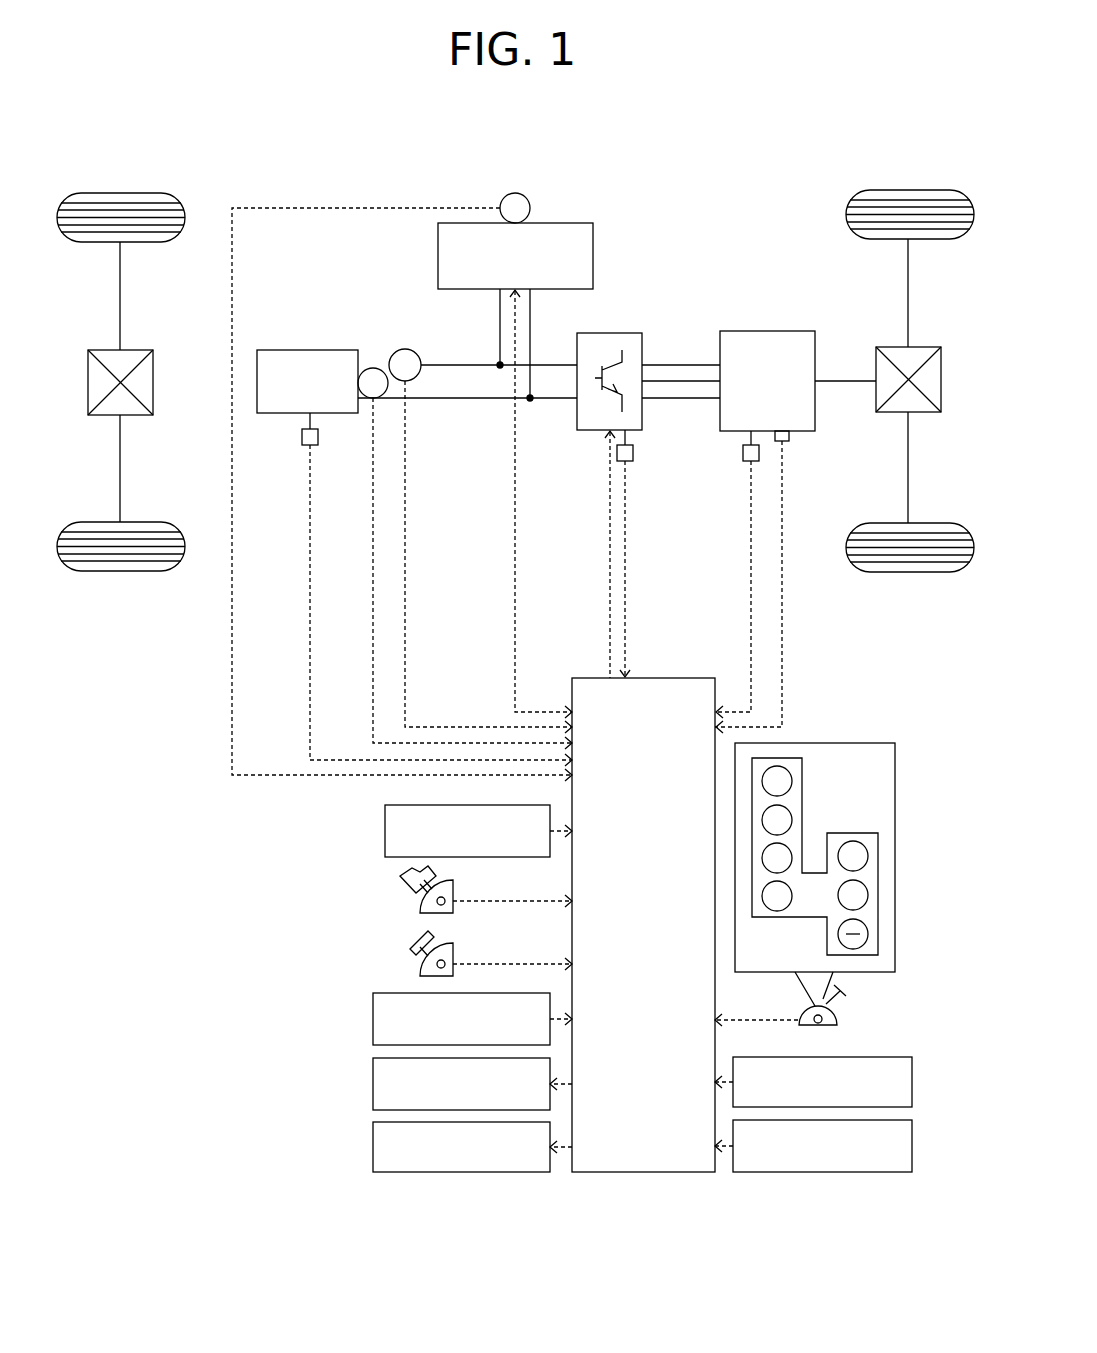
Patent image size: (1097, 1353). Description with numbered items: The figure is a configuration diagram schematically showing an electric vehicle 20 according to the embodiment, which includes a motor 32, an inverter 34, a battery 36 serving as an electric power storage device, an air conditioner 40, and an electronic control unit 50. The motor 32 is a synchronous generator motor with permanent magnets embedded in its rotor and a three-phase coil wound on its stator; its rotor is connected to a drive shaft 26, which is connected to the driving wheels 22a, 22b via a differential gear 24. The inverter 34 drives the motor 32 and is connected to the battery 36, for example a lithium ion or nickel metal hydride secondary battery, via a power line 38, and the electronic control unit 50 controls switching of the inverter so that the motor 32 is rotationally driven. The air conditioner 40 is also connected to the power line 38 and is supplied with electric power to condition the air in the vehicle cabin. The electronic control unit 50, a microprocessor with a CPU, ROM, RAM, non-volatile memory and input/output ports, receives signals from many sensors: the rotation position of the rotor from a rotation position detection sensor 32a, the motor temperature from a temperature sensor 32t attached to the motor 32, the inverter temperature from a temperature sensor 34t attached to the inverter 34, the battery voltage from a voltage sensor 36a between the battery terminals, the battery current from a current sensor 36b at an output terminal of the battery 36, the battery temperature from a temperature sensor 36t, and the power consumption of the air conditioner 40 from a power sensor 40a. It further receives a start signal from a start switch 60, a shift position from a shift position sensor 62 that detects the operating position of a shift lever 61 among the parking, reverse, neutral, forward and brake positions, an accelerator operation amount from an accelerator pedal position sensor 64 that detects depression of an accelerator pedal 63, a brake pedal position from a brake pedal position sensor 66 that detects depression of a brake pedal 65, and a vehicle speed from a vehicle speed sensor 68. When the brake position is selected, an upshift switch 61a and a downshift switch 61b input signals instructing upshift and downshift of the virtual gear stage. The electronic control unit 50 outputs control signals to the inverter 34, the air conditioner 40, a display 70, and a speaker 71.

The electric vehicle 20 is at (735, 158).
The driving wheel 22a is at (905, 190).
The driving wheel 22b is at (905, 572).
The differential gear 24 is at (922, 347).
The drive shaft 26 is at (845, 380).
The motor 32 is at (768, 331).
The temperature sensor 32t is at (743, 458).
The rotation position detection sensor 32a is at (790, 441).
The inverter 34 is at (607, 333).
The temperature sensor 34t is at (633, 455).
The battery 36 is at (309, 350).
The voltage sensor 36a is at (370, 368).
The current sensor 36b is at (409, 349).
The temperature sensor 36t is at (302, 432).
The power line 38 is at (452, 370).
The air conditioner 40 is at (595, 250).
The power sensor 40a is at (532, 209).
The electronic control unit 50 is at (670, 678).
The start switch 60 is at (385, 830).
The shift lever 61 is at (846, 1006).
The upshift switch 61a is at (915, 1081).
The downshift switch 61b is at (915, 1145).
The shift position sensor 62 is at (840, 1021).
The accelerator pedal 63 is at (400, 888).
The accelerator pedal position sensor 64 is at (420, 900).
The brake pedal 65 is at (410, 952).
The brake pedal position sensor 66 is at (420, 962).
The vehicle speed sensor 68 is at (373, 1019).
The display 70 is at (373, 1084).
The speaker 71 is at (373, 1147).